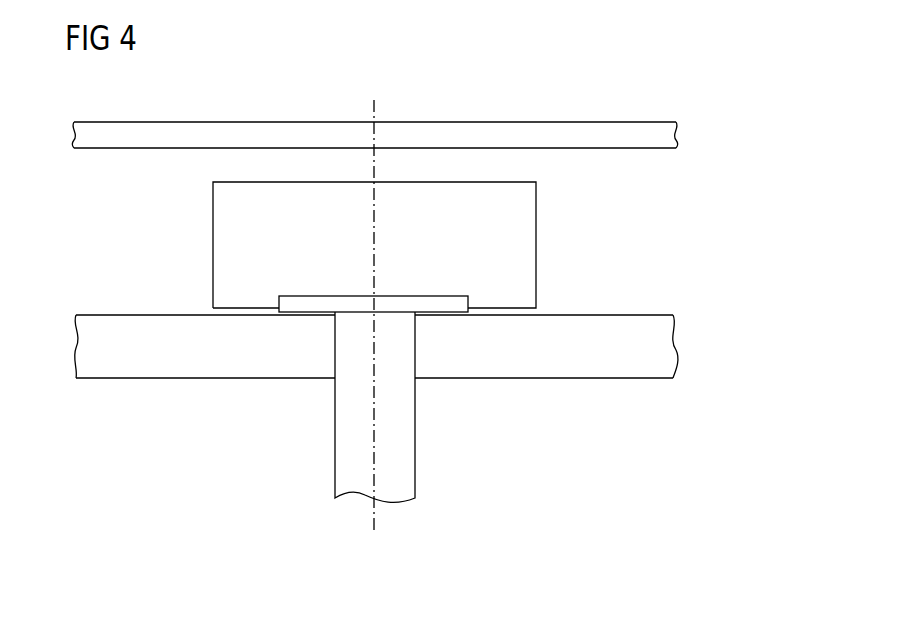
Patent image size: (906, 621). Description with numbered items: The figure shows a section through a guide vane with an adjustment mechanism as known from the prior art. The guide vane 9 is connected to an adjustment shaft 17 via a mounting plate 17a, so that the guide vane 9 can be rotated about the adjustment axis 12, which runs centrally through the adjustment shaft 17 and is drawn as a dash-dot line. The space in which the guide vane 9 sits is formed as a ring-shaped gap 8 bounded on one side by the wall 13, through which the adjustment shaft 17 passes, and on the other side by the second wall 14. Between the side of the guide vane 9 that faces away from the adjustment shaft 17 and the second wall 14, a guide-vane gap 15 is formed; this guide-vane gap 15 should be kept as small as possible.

The ring-shaped gap 8 is at (676, 232).
The guide vane 9 is at (510, 246).
The adjustment axis 12 is at (372, 444).
The wall 13 is at (634, 332).
The second wall 14 is at (633, 140).
The guide-vane gap 15 is at (220, 165).
The adjustment shaft 17 is at (405, 443).
The mounting plate 17a is at (313, 303).